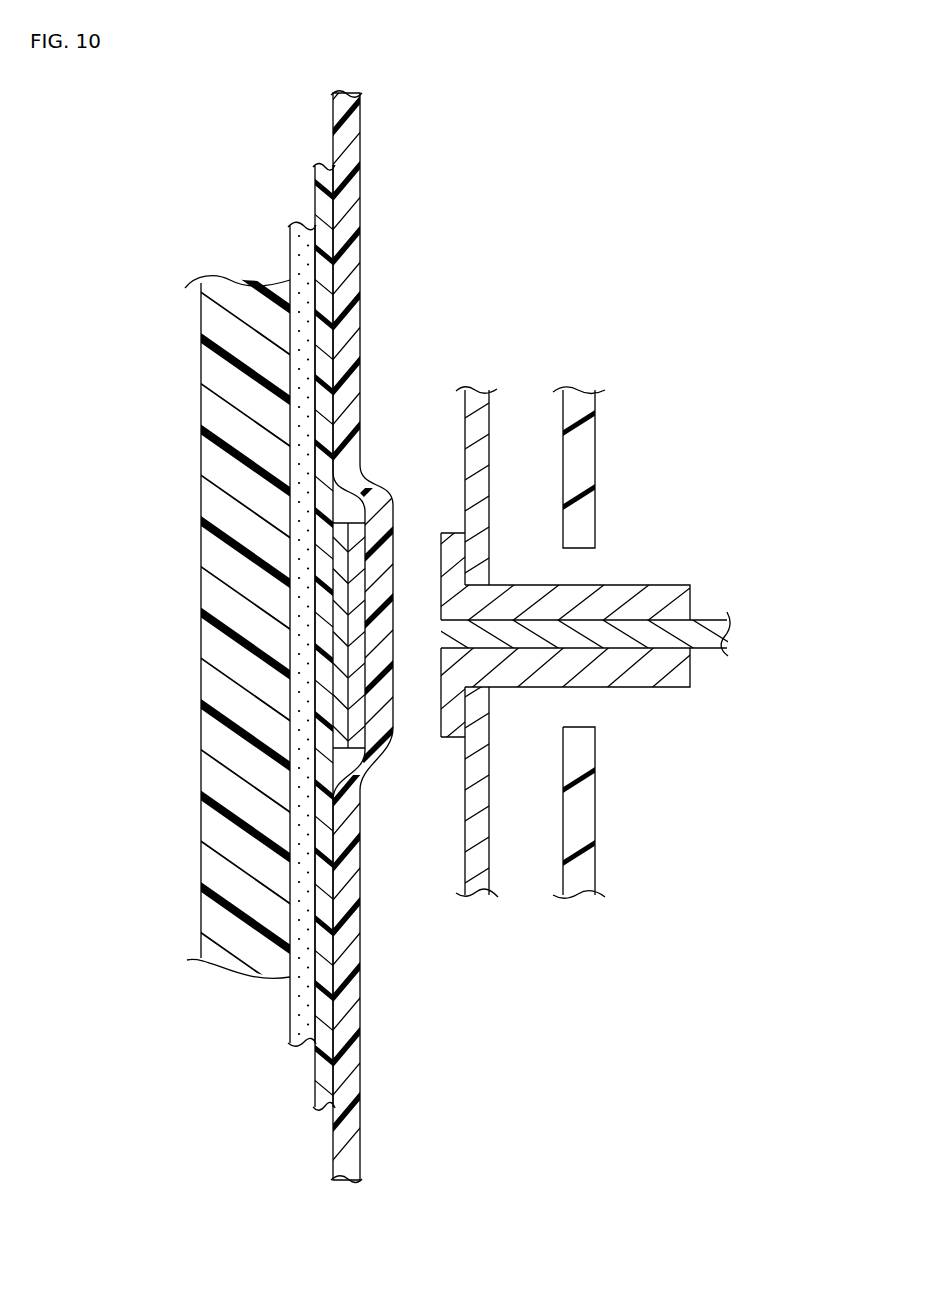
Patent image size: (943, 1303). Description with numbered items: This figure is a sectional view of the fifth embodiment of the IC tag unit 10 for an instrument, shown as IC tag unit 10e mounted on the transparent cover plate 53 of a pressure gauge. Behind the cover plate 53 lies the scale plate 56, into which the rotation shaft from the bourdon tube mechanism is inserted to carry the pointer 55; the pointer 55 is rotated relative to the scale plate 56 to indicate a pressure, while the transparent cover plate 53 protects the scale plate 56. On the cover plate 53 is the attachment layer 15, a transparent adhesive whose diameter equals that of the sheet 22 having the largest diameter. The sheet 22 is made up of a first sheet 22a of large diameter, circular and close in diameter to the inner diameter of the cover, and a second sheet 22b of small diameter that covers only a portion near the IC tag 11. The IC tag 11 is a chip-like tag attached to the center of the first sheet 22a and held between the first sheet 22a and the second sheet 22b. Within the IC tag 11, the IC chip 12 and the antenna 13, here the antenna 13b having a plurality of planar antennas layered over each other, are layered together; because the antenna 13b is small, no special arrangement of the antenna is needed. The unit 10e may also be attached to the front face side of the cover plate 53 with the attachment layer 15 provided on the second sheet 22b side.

The IC tag unit 10 is at (317, 620).
The IC tag unit 10e is at (317, 620).
The IC tag 11 is at (445, 802).
The IC chip 12 is at (370, 707).
The antenna 13 is at (414, 773).
The antenna 13b is at (338, 758).
The attachment layer 15 is at (290, 249).
The sheet 22 is at (259, 620).
The first sheet 22a is at (315, 180).
The second sheet 22b is at (333, 112).
The transparent cover plate 53 is at (200, 913).
The pointer 55 is at (472, 388).
The scale plate 56 is at (597, 467).